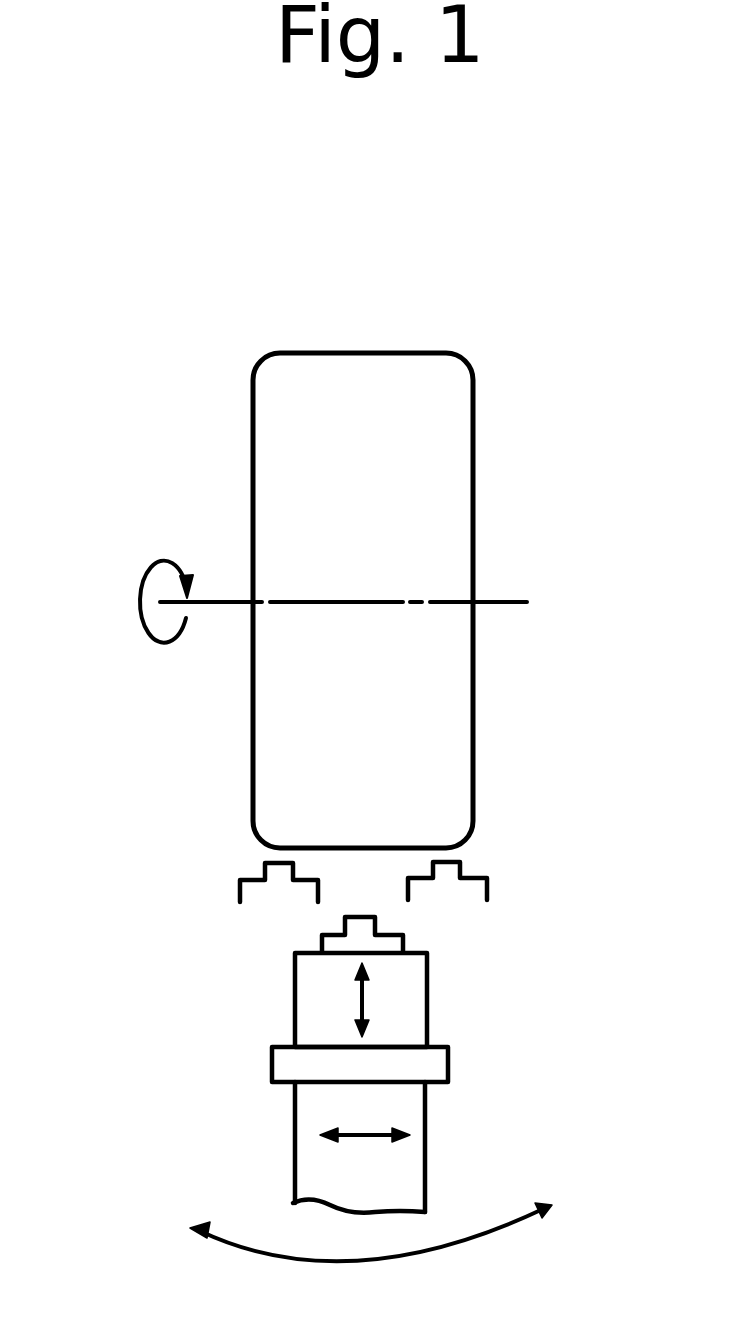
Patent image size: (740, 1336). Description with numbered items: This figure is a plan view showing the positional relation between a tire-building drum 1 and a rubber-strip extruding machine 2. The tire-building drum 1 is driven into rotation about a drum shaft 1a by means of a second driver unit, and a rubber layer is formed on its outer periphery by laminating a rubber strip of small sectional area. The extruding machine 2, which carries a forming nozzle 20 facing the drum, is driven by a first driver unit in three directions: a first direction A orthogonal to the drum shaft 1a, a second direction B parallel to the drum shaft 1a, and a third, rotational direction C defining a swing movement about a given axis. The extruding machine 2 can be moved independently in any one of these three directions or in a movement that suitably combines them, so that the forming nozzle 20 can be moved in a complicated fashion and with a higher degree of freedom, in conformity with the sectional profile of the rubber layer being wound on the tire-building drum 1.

The tire-building drum 1 is at (475, 397).
The drum shaft 1a is at (507, 605).
The forming nozzle 20 is at (213, 883).
The rubber-strip extruding machine 2 is at (268, 1100).
The first direction A is at (360, 1005).
The second direction B is at (367, 1132).
The third and rotational direction C is at (371, 1265).